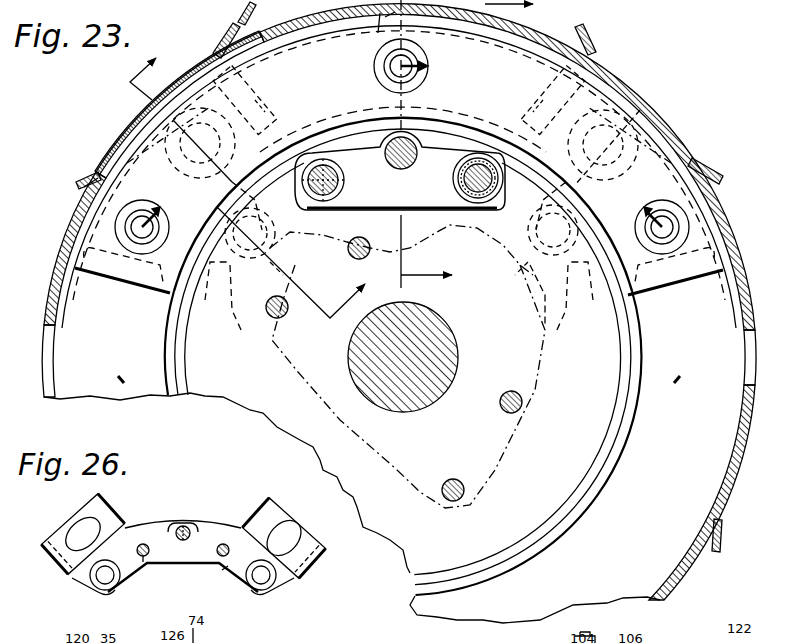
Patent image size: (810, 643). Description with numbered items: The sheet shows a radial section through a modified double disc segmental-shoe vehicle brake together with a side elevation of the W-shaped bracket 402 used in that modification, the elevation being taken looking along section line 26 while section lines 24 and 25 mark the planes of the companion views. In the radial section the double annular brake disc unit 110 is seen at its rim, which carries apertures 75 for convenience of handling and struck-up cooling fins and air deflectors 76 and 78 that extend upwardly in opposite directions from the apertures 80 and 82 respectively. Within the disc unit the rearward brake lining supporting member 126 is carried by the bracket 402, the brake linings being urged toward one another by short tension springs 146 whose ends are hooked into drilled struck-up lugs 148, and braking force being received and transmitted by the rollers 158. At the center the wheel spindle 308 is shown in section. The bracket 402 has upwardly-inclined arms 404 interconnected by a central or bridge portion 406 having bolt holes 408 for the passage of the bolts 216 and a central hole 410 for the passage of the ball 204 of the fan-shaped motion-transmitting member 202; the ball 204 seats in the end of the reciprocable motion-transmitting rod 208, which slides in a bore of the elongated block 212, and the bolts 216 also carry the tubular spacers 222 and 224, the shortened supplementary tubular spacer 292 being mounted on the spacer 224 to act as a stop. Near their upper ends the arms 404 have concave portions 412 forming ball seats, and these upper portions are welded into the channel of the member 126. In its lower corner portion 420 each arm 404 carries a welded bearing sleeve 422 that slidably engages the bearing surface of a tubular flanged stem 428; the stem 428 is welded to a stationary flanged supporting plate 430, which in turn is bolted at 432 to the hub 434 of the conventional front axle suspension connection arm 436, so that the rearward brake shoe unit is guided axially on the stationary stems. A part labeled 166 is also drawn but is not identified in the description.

In FIG. 23, the section line 24 is at (247, 178).
In FIG. 23, the section line 25 is at (483, 144).
In FIG. 26, the section line 26 is at (228, 568).
In FIG. 23, the aperture 75 is at (385, 17).
In FIG. 23, the cooling fin and air deflector 76 is at (90, 172).
In FIG. 23, the cooling fin and air deflector 78 is at (226, 36).
In FIG. 23, the aperture 80 is at (86, 191).
In FIG. 23, the aperture 82 is at (247, 27).
In FIG. 23, the double annular brake disc unit 110 is at (738, 236).
In FIG. 23, the brake lining supporting member 126 is at (378, 33).
In FIG. 23, the tension spring 146 is at (380, 78).
In FIG. 23, the drilled struck-up lug 148 is at (428, 72).
In FIG. 23, the roller 158 is at (399, 148).
In FIG. 23, the mounting plate 166 is at (90, 282).
In FIG. 26, the fan-shaped motion-transmitting member 202 is at (190, 527).
In FIG. 26, the ball 204 is at (170, 527).
In FIG. 23, the reciprocable motion-transmitting rod 208 is at (392, 162).
In FIG. 23, the elongated block 212 is at (454, 195).
In FIG. 23, the bolt 216 is at (338, 175).
In FIG. 26, the bolt 216 is at (145, 565).
In FIG. 23, the tubular spacer 222 is at (337, 186).
In FIG. 23, the tubular spacer 224 is at (460, 178).
In FIG. 23, the supplementary tubular spacer 292 is at (451, 216).
In FIG. 23, the wheel spindle 308 is at (413, 406).
In FIG. 23, the W-shaped bracket 402 is at (433, 128).
In FIG. 26, the W-shaped bracket 402 is at (284, 589).
In FIG. 23, the upwardly-inclined arm 404 is at (270, 112).
In FIG. 26, the upwardly-inclined arm 404 is at (64, 527).
In FIG. 26, the bridge portion 406 is at (188, 565).
In FIG. 26, the bolt hole 408 is at (143, 543).
In FIG. 26, the central hole 410 is at (186, 525).
In FIG. 23, the concave portion 412 is at (262, 86).
In FIG. 26, the concave portion 412 is at (70, 536).
In FIG. 23, the lower corner portion 420 is at (232, 311).
In FIG. 26, the lower corner portion 420 is at (112, 590).
In FIG. 23, the bearing sleeve 422 is at (300, 242).
In FIG. 26, the bearing sleeve 422 is at (97, 588).
In FIG. 23, the tubular flanged stem 428 is at (212, 270).
In FIG. 23, the stationary flanged supporting plate 430 is at (617, 403).
In FIG. 23, the bolt 432 is at (350, 253).
In FIG. 23, the hub 434 is at (506, 456).
In FIG. 23, the front axle suspension connection arm 436 is at (548, 312).